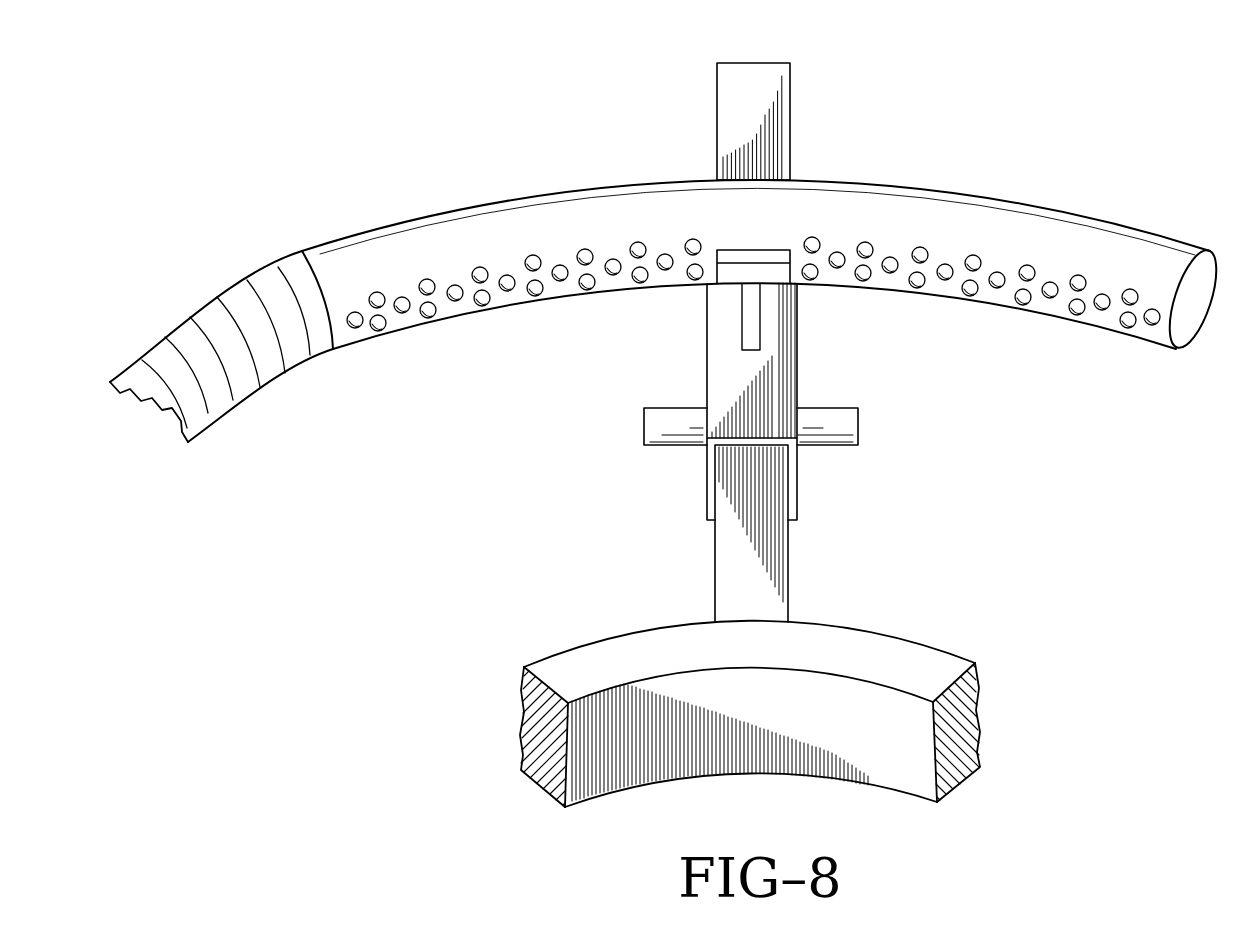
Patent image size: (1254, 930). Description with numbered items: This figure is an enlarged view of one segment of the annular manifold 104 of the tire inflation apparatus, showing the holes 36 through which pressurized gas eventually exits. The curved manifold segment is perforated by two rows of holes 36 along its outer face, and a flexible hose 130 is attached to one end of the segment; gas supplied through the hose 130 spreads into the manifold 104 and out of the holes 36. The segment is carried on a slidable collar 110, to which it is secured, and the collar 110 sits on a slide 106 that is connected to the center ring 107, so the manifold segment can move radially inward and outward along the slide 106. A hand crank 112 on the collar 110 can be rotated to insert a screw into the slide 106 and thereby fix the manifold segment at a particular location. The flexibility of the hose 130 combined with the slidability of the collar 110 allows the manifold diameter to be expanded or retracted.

The annular manifold 104 is at (1073, 250).
The holes 36 is at (534, 291).
The hose 130 is at (273, 348).
The slidable collar 110 is at (737, 375).
The hand crank 112 is at (663, 422).
The slide 106 is at (747, 580).
The center ring 107 is at (625, 667).